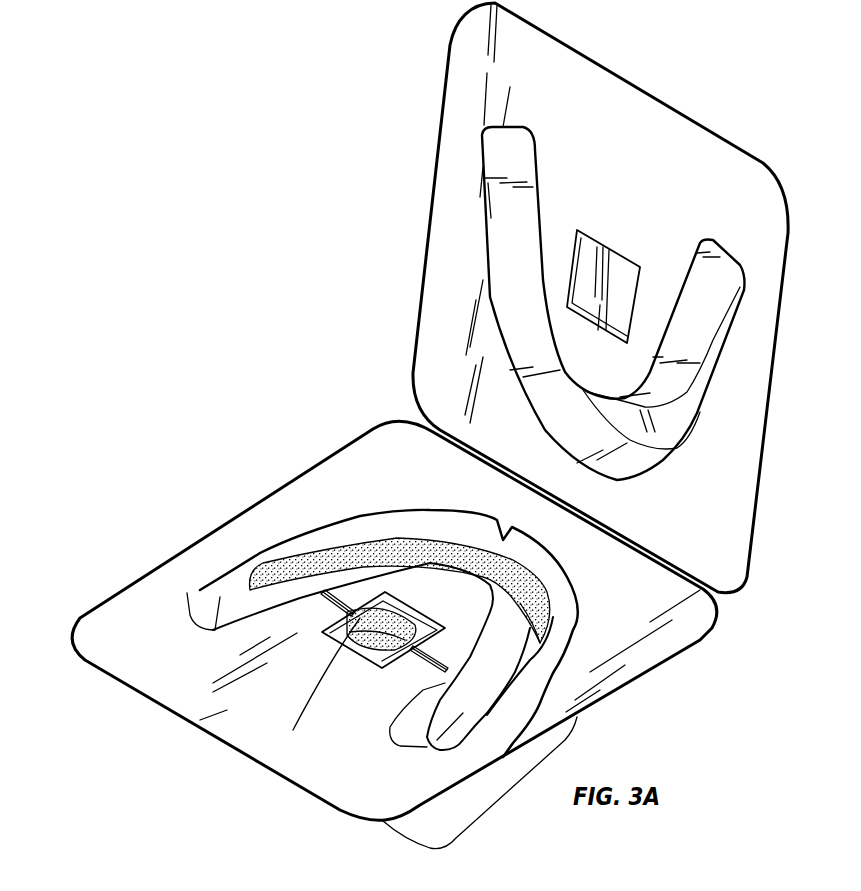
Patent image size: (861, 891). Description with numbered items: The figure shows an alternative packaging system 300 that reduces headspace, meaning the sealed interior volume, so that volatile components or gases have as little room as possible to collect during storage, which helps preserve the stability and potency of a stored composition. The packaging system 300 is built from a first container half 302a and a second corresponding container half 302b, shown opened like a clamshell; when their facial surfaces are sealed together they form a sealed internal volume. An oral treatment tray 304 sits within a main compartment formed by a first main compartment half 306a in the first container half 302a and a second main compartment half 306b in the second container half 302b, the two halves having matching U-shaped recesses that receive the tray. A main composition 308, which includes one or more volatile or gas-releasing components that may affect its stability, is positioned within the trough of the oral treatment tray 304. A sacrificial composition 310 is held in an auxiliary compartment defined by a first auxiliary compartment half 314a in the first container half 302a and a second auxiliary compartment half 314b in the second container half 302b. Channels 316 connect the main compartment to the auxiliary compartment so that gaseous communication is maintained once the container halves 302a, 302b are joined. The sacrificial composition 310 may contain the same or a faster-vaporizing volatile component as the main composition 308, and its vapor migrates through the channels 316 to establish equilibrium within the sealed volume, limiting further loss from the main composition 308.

The packaging system 300 is at (177, 231).
The first container half 302a is at (123, 627).
The second container half 302b is at (467, 70).
The oral treatment tray 304 is at (333, 537).
The first main compartment half 306a is at (207, 597).
The second main compartment half 306b is at (507, 233).
The main composition 308 is at (540, 583).
The sacrificial composition 310 is at (293, 730).
The first auxiliary compartment half 314a is at (322, 632).
The second auxiliary compartment half 314b is at (614, 292).
The channels 316 is at (330, 603).